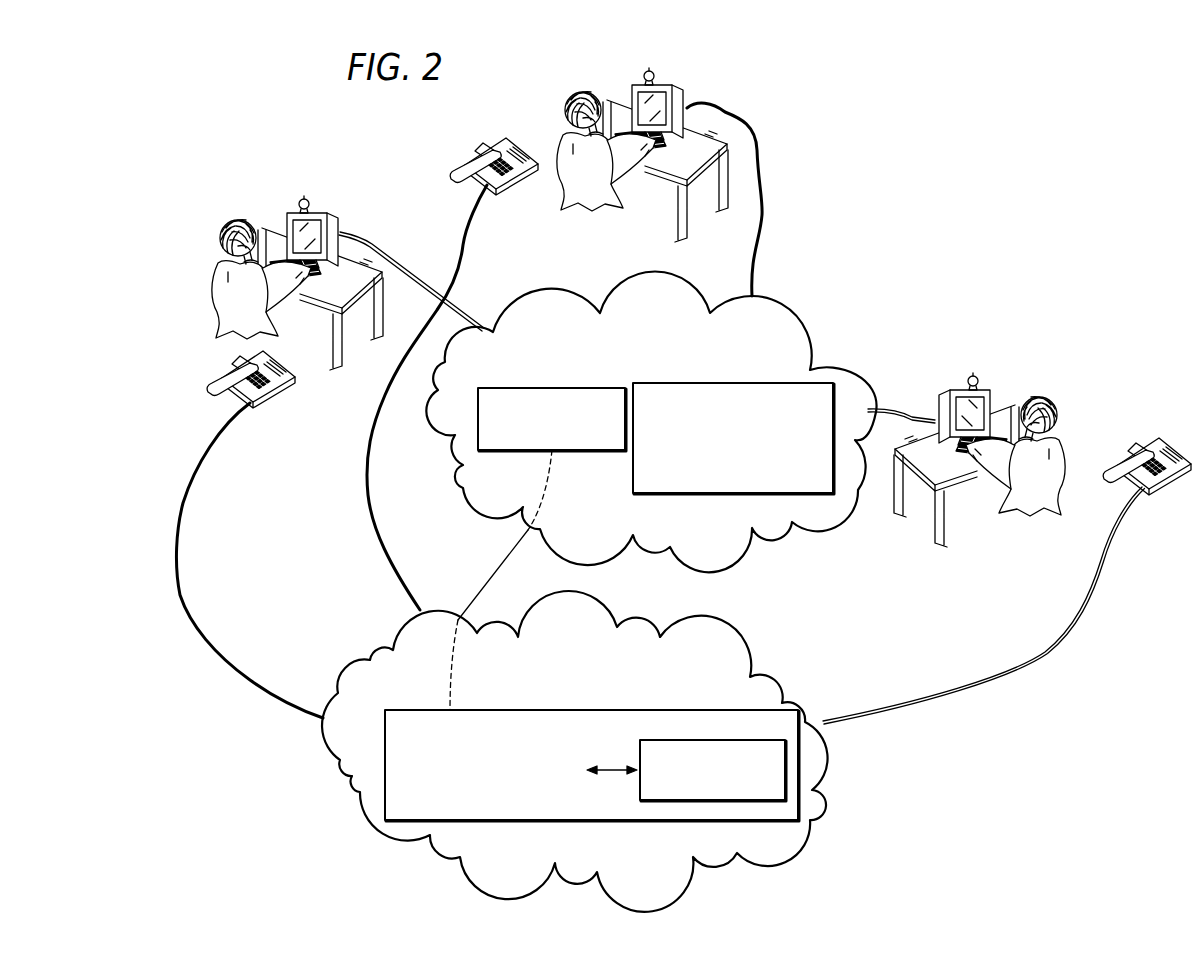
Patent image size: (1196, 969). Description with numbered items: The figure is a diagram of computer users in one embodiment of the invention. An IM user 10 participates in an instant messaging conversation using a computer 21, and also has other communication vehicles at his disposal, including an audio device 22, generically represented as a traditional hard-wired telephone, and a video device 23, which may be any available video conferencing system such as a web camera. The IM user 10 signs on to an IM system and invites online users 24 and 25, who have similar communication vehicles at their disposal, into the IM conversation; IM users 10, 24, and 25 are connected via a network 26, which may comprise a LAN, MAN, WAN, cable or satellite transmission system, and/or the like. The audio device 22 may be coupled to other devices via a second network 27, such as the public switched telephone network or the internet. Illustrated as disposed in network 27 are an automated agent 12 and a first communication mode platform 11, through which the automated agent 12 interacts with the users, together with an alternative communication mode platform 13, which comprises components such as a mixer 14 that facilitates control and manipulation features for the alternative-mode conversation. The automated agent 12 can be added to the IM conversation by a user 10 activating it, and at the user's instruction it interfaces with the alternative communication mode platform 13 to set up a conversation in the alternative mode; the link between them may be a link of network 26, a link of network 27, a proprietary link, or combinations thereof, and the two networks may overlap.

The IM user 10 is at (215, 231).
The first communication mode platform 11 is at (661, 498).
The automated agent 12 is at (588, 462).
The alternative communication mode platform 13 is at (617, 782).
The mixer 14 is at (724, 803).
The computer 21 is at (348, 230).
The audio device 22 is at (281, 404).
The video device 23 is at (322, 196).
The online user 24 is at (553, 100).
The online user 25 is at (1060, 392).
The network 26 is at (634, 422).
The network 27 is at (545, 751).